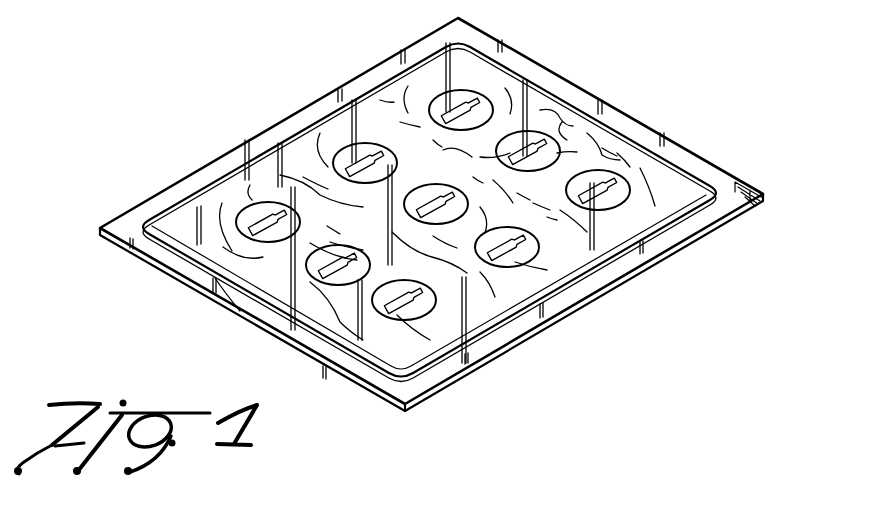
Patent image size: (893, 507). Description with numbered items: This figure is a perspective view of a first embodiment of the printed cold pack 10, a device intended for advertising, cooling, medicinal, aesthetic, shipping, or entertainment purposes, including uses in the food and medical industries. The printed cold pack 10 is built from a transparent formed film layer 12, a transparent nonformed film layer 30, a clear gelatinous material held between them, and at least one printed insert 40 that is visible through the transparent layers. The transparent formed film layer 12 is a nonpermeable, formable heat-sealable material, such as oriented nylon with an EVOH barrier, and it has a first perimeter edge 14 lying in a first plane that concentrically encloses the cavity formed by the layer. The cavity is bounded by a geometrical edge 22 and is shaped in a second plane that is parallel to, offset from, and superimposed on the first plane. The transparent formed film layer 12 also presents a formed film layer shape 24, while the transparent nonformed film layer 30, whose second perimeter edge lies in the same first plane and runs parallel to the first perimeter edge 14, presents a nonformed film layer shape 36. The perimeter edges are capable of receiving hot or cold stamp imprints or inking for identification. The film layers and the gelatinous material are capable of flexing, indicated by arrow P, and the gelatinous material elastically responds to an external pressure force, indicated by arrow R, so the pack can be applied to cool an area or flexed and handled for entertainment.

The printed cold pack 10 is at (412, 209).
The transparent formed film layer 12 is at (188, 223).
The first perimeter edge 14 is at (354, 84).
The geometrical edge 22 is at (207, 182).
The formed film layer shape 24 is at (518, 48).
The nonformed film layer shape 36 is at (431, 206).
The transparent nonformed film layer 30 is at (175, 272).
The printed insert 40 is at (350, 156).
The external pressure force R is at (394, 53).
The flexing P is at (797, 152).